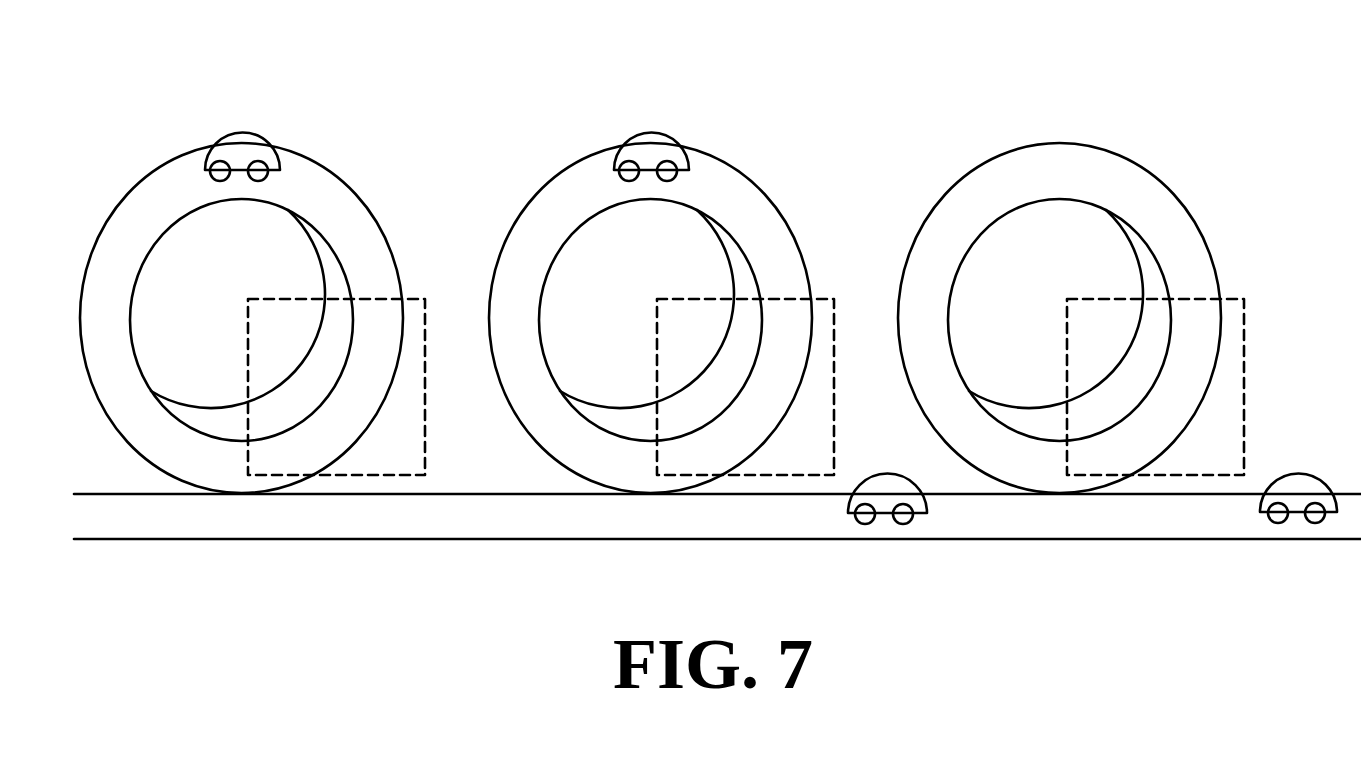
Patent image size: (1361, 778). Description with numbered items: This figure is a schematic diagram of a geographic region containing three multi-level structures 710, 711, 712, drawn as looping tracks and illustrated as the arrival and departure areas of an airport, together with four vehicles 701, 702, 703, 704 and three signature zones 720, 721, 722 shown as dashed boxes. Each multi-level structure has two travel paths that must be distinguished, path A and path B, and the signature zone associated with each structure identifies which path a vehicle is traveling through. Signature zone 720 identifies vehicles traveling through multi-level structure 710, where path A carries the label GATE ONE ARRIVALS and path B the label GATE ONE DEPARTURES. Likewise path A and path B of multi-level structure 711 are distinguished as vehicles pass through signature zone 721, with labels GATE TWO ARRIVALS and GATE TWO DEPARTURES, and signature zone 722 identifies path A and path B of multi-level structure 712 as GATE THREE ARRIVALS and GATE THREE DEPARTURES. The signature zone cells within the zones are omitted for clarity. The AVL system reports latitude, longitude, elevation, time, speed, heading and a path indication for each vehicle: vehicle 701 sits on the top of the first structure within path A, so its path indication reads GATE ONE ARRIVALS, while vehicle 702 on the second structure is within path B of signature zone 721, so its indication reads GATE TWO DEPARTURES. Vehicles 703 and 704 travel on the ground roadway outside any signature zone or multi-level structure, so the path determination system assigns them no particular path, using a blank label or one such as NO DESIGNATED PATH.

The vehicle 701 is at (233, 132).
The vehicle 702 is at (642, 132).
The vehicle 703 is at (882, 475).
The vehicle 704 is at (1293, 474).
The multi-level structure 710 is at (315, 180).
The multi-level structure 711 is at (724, 180).
The multi-level structure 712 is at (1133, 178).
The signature zone 720 is at (408, 298).
The signature zone 721 is at (817, 298).
The signature zone 722 is at (1226, 298).